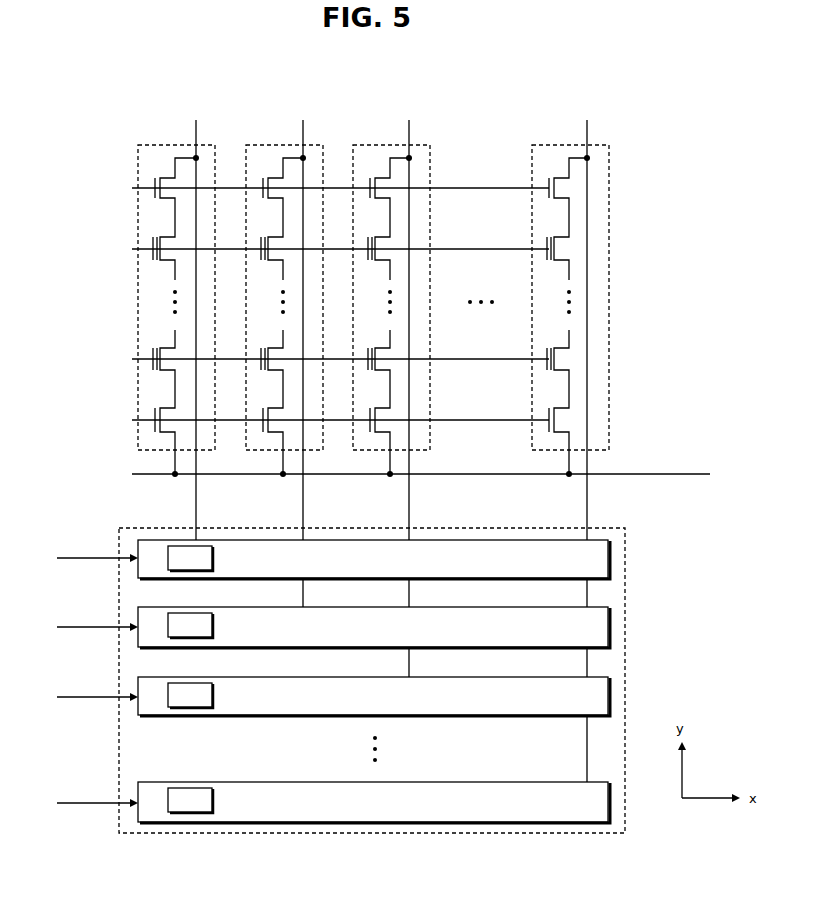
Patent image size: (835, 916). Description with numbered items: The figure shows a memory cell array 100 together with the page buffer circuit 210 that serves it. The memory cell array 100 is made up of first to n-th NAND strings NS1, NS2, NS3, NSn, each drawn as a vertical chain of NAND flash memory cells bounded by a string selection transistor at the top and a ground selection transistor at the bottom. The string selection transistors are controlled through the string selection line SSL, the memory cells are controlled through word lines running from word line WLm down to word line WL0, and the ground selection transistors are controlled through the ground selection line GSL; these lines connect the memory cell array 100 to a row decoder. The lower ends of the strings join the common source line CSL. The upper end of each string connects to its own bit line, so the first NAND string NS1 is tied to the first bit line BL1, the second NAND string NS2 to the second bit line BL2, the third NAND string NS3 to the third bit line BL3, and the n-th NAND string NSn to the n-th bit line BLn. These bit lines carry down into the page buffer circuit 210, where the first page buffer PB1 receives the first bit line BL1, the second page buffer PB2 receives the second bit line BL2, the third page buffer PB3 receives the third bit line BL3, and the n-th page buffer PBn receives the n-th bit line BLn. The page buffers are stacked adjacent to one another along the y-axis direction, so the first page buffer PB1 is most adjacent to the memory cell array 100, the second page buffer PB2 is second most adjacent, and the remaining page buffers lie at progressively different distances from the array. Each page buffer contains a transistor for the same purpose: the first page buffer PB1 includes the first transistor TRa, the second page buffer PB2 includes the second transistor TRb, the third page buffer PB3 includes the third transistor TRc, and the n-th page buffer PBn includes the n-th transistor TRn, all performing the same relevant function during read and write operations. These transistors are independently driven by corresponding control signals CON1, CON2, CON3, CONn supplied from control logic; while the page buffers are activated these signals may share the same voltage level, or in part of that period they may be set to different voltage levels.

The memory cell array 100 is at (396, 441).
The page buffer circuit 210 is at (357, 680).
The first NAND string NS1 is at (166, 145).
The second NAND string NS2 is at (274, 145).
The third NAND string NS3 is at (381, 145).
The n-th NAND string NSn is at (565, 288).
The first bit line BL1 is at (211, 330).
The second bit line BL2 is at (319, 363).
The third bit line BL3 is at (425, 398).
The n-th bit line BLn is at (602, 451).
The string selection line SSL is at (318, 188).
The word line m WLm is at (315, 249).
The word line 0 WL0 is at (317, 359).
The ground selection line GSL is at (318, 420).
The common source line CSL is at (399, 474).
The first page buffer PB1 is at (374, 559).
The second page buffer PB2 is at (374, 627).
The third page buffer PB3 is at (374, 696).
The n-th page buffer PBn is at (374, 802).
The first transistor TRa is at (190, 558).
The second transistor TRb is at (190, 625).
The third transistor TRc is at (190, 695).
The n-th transistor TRn is at (190, 800).
The first control signal CON1 is at (94, 549).
The second control signal CON2 is at (94, 618).
The third control signal CON3 is at (94, 688).
The n-th control signal CONn is at (94, 794).